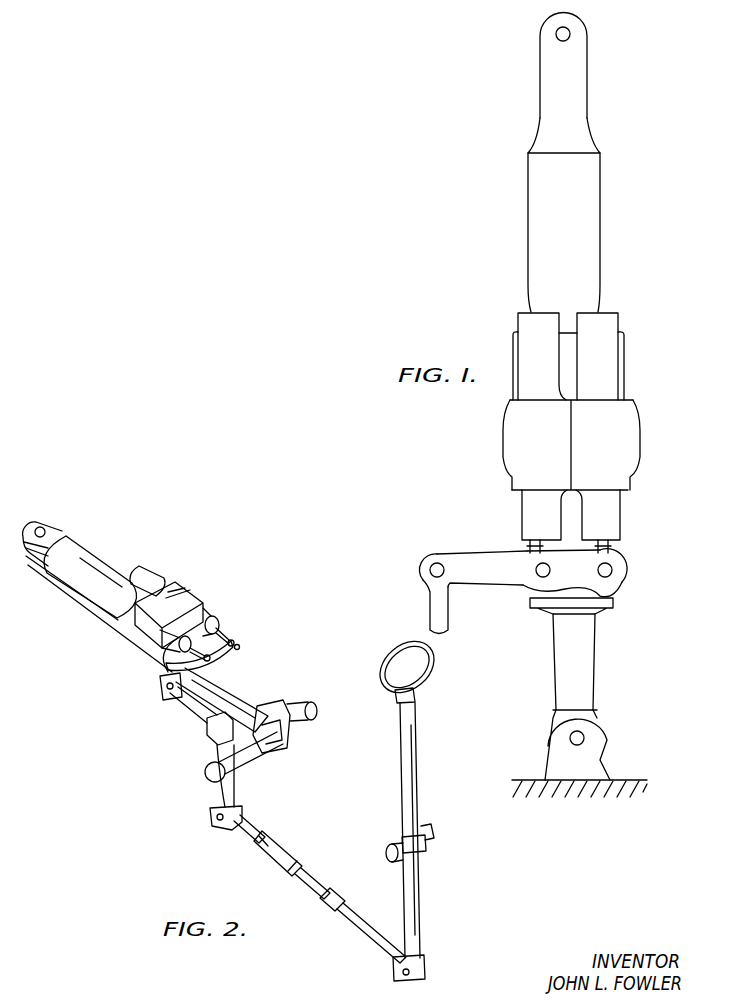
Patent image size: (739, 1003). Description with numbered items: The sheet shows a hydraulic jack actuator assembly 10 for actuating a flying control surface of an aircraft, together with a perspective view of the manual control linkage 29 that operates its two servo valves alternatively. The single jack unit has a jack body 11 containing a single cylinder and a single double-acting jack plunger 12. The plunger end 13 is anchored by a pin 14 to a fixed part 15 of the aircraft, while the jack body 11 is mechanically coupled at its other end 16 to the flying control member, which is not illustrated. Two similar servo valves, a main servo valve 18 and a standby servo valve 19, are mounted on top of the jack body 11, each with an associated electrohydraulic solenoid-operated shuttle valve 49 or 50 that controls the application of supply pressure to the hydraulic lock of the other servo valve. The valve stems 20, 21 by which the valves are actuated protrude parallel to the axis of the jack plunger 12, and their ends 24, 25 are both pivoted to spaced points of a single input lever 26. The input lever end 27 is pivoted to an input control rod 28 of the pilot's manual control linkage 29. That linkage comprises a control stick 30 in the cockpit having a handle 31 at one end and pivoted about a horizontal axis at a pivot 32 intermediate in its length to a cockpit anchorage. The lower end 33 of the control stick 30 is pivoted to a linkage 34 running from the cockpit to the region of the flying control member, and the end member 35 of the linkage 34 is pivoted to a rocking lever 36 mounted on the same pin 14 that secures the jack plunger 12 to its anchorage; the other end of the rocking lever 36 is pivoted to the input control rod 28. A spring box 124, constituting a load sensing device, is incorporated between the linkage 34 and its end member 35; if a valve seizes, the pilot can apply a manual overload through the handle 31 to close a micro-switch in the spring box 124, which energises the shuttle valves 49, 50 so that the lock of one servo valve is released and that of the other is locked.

In FIG. 1, the jack actuator assembly 10 is at (528, 285).
In FIG. 1, the jack body 11 is at (601, 296).
In FIG. 2, the jack body 11 is at (88, 556).
In FIG. 1, the jack plunger 12 is at (597, 645).
In FIG. 2, the jack plunger 12 is at (252, 690).
In FIG. 1, the plunger end 13 is at (600, 724).
In FIG. 2, the plunger end 13 is at (277, 738).
In FIG. 1, the pin 14 is at (569, 738).
In FIG. 2, the pin 14 is at (255, 758).
In FIG. 1, the fixed part of the aircraft 15 is at (625, 780).
In FIG. 1, the jack body end 16 is at (556, 33).
In FIG. 2, the jack body end 16 is at (38, 522).
In FIG. 1, the main servo valve 18 is at (523, 497).
In FIG. 2, the main servo valve 18 is at (125, 643).
In FIG. 1, the standby servo valve 19 is at (610, 497).
In FIG. 2, the standby servo valve 19 is at (211, 617).
In FIG. 1, the valve stem 20 is at (529, 549).
In FIG. 2, the valve stem 20 is at (165, 667).
In FIG. 1, the valve stem 21 is at (618, 548).
In FIG. 2, the valve stem 21 is at (231, 639).
In FIG. 1, the stem end 24 is at (540, 578).
In FIG. 2, the stem end 24 is at (232, 656).
In FIG. 1, the stem end 25 is at (612, 575).
In FIG. 2, the stem end 25 is at (240, 647).
In FIG. 1, the input lever 26 is at (475, 577).
In FIG. 2, the input lever 26 is at (190, 706).
In FIG. 1, the input lever end 27 is at (430, 563).
In FIG. 2, the input lever end 27 is at (163, 691).
In FIG. 1, the input control rod 28 is at (434, 598).
In FIG. 2, the input control rod 28 is at (206, 724).
In FIG. 2, the manual control linkage 29 is at (304, 863).
In FIG. 2, the control stick 30 is at (418, 764).
In FIG. 2, the handle 31 is at (429, 673).
In FIG. 2, the pivot 32 is at (434, 834).
In FIG. 2, the lower end of control stick 33 is at (421, 961).
In FIG. 2, the linkage 34 is at (341, 902).
In FIG. 2, the end member 35 is at (255, 826).
In FIG. 2, the rocking lever 36 is at (218, 795).
In FIG. 1, the shuttle valve 49 is at (527, 360).
In FIG. 2, the shuttle valve 49 is at (95, 614).
In FIG. 1, the shuttle valve 50 is at (612, 345).
In FIG. 2, the shuttle valve 50 is at (151, 570).
In FIG. 2, the spring box 124 is at (291, 856).